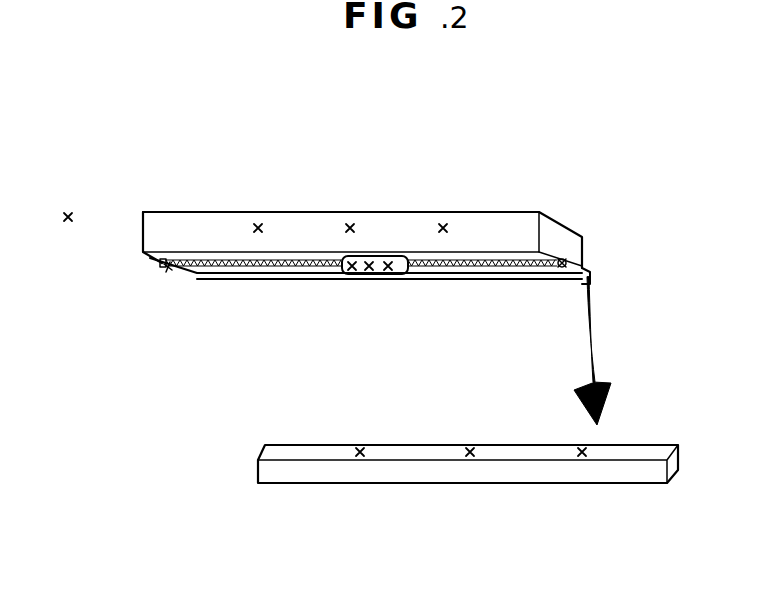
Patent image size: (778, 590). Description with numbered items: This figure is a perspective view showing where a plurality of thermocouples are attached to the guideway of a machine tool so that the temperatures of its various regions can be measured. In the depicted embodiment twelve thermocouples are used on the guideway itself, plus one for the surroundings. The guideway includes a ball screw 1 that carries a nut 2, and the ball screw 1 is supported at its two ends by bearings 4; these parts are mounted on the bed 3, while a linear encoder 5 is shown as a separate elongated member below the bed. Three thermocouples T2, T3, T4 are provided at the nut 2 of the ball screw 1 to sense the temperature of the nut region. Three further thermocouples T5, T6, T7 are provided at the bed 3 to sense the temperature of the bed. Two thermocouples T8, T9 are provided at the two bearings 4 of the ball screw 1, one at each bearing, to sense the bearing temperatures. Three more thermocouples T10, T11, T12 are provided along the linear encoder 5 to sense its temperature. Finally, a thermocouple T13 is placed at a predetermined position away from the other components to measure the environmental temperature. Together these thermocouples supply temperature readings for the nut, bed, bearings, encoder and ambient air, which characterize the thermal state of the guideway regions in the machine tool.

The ball screw 1 is at (502, 270).
The nut 2 is at (383, 256).
The bed 3 is at (525, 212).
The bearings 4 is at (160, 266).
The linear encoder 5 is at (658, 475).
The thermocouple T2 is at (351, 274).
The thermocouple T3 is at (368, 274).
The thermocouple T4 is at (390, 274).
The thermocouple T5 is at (257, 224).
The thermocouple T6 is at (350, 224).
The thermocouple T7 is at (443, 224).
The thermocouple T8 is at (170, 272).
The thermocouple T9 is at (562, 274).
The thermocouple T10 is at (360, 448).
The thermocouple T11 is at (470, 448).
The thermocouple T12 is at (582, 448).
The thermocouple T13 is at (67, 225).